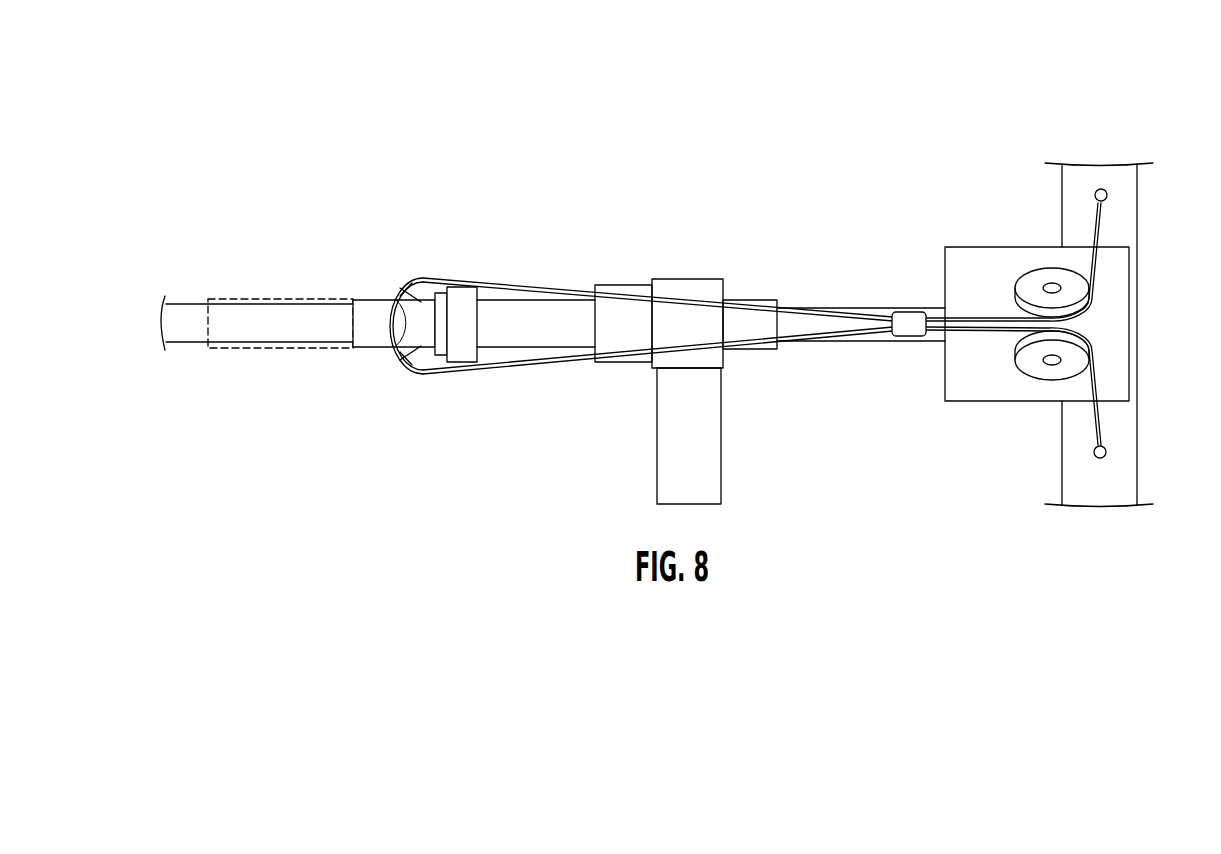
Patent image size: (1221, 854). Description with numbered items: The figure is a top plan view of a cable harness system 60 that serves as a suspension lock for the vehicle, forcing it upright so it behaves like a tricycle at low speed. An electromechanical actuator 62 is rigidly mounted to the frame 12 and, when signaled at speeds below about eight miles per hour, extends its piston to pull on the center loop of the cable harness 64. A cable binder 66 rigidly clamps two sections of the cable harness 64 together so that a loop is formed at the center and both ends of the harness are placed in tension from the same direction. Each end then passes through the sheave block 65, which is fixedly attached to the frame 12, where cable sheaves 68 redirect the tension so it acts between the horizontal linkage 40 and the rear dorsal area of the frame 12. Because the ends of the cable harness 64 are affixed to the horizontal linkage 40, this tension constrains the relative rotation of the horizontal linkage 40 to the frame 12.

The frame 12 is at (190, 303).
The horizontal linkage 40 is at (1140, 465).
The cable harness system 60 is at (811, 107).
The actuator 62 is at (723, 423).
The cable harness 64 is at (834, 305).
The sheave block 65 is at (987, 246).
The cable binder 66 is at (903, 311).
The cable sheaves 68 is at (1073, 356).